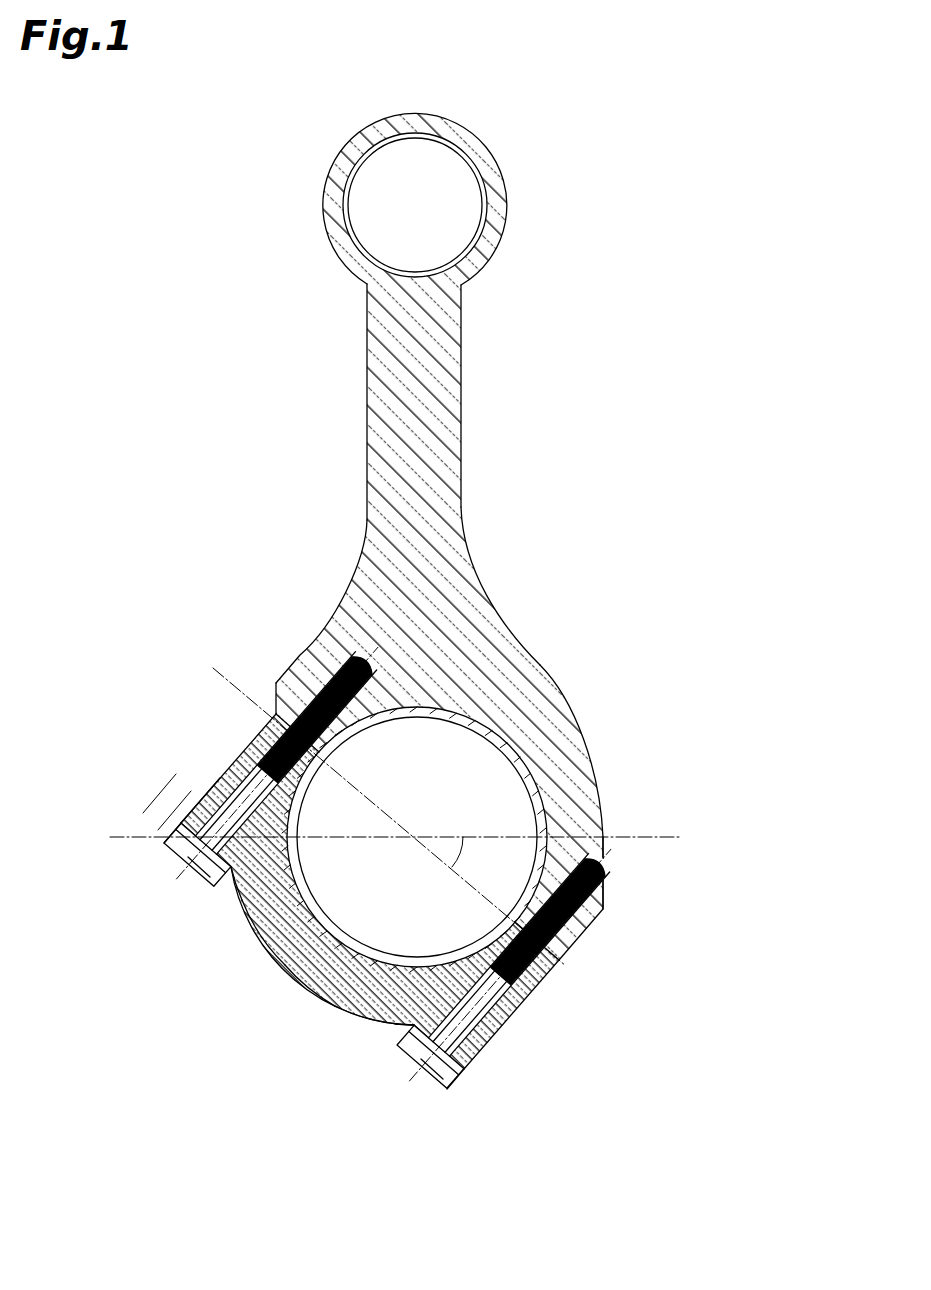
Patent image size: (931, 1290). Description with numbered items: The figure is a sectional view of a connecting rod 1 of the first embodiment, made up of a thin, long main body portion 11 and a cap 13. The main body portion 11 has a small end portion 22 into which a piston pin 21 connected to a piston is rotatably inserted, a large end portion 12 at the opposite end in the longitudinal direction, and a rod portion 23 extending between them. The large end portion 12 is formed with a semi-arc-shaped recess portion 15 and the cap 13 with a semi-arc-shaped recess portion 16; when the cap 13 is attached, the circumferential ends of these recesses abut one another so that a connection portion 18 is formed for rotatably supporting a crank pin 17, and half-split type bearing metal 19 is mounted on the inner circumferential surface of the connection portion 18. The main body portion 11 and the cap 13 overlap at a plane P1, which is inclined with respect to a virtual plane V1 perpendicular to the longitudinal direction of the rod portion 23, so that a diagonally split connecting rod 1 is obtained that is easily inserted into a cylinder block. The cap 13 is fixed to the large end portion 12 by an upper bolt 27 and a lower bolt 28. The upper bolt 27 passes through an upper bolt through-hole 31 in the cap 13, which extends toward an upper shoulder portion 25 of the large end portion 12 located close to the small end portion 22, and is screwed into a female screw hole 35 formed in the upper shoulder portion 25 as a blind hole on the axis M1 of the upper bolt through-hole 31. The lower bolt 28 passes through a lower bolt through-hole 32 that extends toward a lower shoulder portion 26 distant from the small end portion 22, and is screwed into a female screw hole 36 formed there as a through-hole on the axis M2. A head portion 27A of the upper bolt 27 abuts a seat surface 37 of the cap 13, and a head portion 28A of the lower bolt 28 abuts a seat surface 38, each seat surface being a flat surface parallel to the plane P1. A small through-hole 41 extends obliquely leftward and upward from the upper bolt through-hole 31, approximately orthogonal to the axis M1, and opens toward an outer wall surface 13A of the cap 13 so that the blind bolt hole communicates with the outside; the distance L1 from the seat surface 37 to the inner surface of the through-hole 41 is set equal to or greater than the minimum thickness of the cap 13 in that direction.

The connecting rod 1 is at (590, 139).
The main body portion 11 is at (462, 438).
The large end portion 12 is at (512, 677).
The cap 13 is at (258, 946).
The outer wall surface of the cap 13A is at (243, 755).
The semi-arc-shaped recess portion of the large end portion 15 is at (585, 740).
The semi-arc-shaped recess portion of the cap 16 is at (292, 960).
The crank pin 17 is at (342, 1012).
The connection portion 18 is at (540, 722).
The half-split type bearing metal 19 is at (305, 998).
The piston pin 21 is at (347, 150).
The small end portion 22 is at (333, 202).
The rod portion 23 is at (378, 400).
The upper shoulder portion 25 is at (297, 652).
The lower shoulder portion 26 is at (592, 780).
The upper bolt 27 is at (186, 879).
The head portion of the upper bolt 27A is at (178, 850).
The lower bolt 28 is at (440, 1082).
The head portion of the lower bolt 28A is at (458, 1083).
The upper bolt through-hole 31 is at (241, 769).
The lower bolt through-hole 32 is at (481, 995).
The female screw hole 35 is at (317, 717).
The female screw hole 36 is at (550, 919).
The seat surface 37 is at (240, 905).
The seat surface 38 is at (402, 1028).
The through-hole 41 is at (197, 807).
The distance L1 is at (159, 795).
The axis of the upper bolt through-hole M1 is at (164, 897).
The axis of the lower bolt through-hole M2 is at (410, 1080).
The plane P1 is at (561, 963).
The virtual plane V1 is at (648, 840).